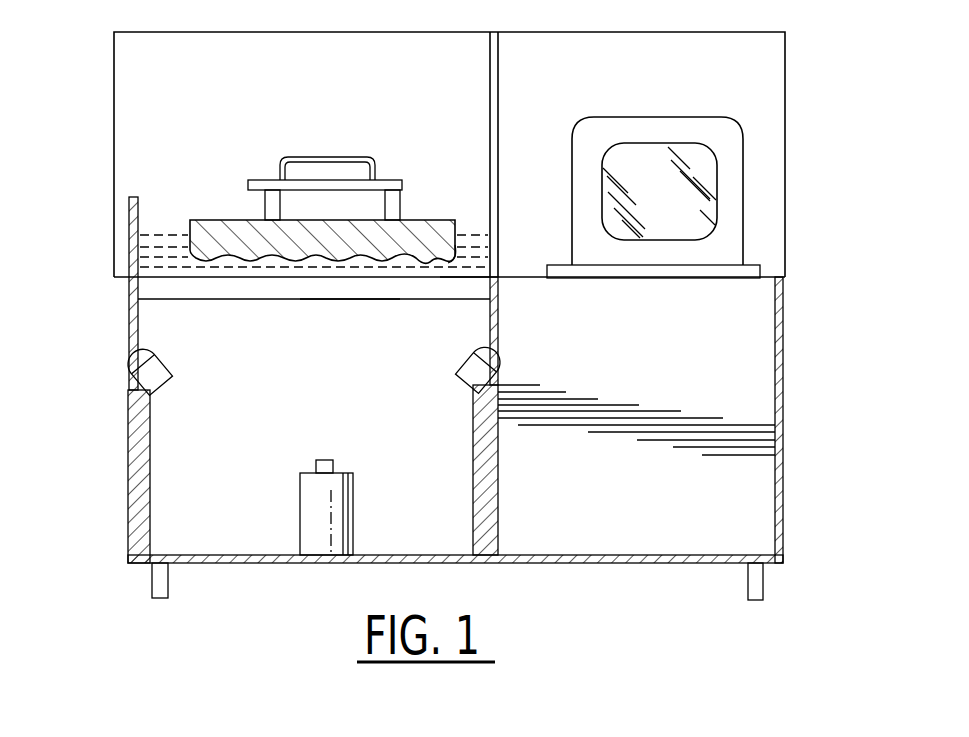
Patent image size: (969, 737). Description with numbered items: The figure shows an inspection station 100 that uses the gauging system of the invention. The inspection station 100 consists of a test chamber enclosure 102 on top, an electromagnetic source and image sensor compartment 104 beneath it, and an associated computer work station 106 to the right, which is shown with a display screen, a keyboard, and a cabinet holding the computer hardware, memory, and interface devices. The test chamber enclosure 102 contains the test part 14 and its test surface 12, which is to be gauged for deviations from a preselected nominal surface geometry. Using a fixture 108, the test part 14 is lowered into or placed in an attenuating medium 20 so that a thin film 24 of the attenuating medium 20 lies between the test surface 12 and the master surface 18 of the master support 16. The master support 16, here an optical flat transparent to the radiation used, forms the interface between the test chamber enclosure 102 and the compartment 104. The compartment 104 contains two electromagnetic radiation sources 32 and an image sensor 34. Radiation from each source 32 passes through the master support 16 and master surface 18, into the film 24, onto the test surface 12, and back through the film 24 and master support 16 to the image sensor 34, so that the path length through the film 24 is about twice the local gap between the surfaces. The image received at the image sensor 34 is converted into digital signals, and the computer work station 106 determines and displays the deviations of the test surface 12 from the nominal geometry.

The inspection station 100 is at (544, 23).
The test chamber enclosure 102 is at (114, 90).
The electromagnetic source and image sensor compartment 104 is at (128, 418).
The computer work station 106 is at (748, 247).
The fixture 108 is at (385, 181).
The test surface 12 is at (455, 262).
The test part 14 is at (212, 219).
The master support 16 is at (330, 290).
The master surface 18 is at (470, 262).
The attenuating medium 20 is at (150, 236).
The thin film 24 is at (262, 267).
The electromagnetic radiation source 32 is at (174, 382).
The image sensor 34 is at (355, 498).